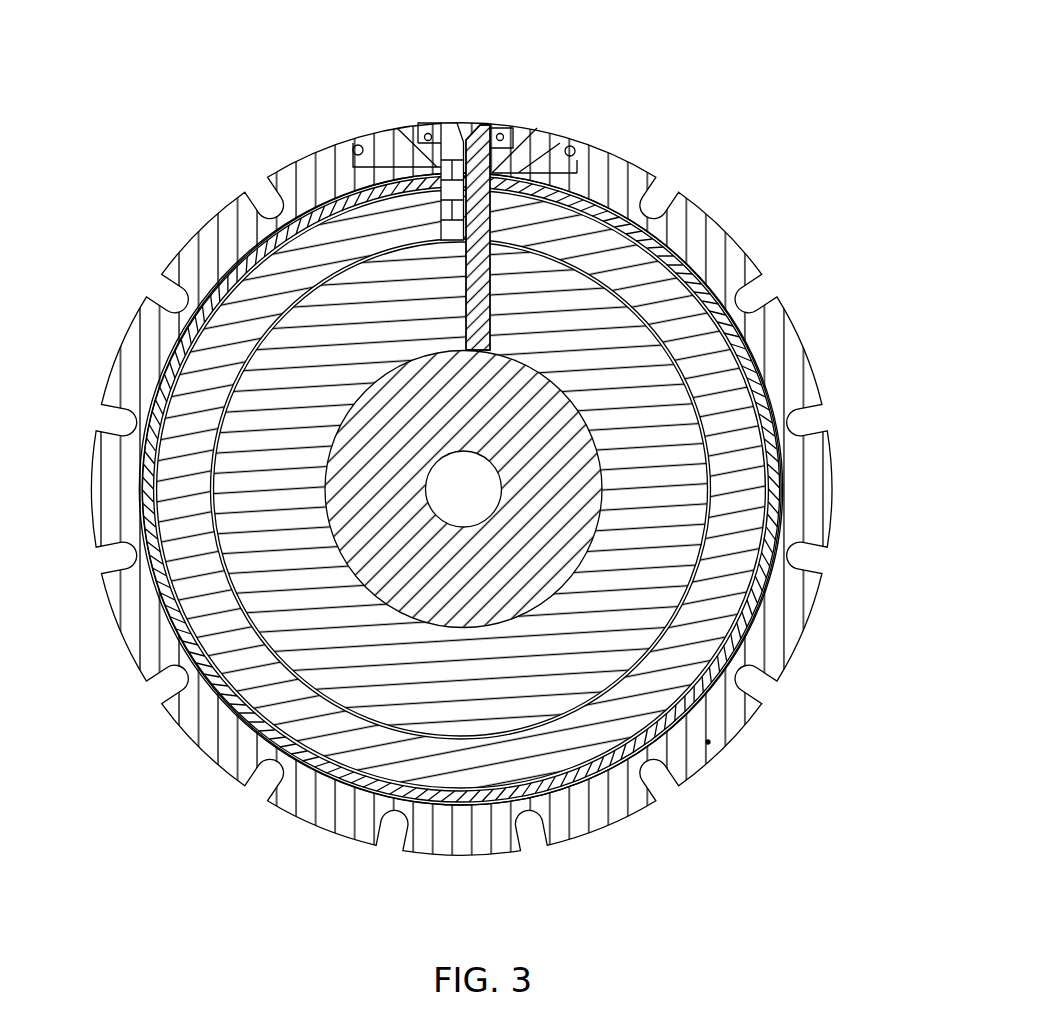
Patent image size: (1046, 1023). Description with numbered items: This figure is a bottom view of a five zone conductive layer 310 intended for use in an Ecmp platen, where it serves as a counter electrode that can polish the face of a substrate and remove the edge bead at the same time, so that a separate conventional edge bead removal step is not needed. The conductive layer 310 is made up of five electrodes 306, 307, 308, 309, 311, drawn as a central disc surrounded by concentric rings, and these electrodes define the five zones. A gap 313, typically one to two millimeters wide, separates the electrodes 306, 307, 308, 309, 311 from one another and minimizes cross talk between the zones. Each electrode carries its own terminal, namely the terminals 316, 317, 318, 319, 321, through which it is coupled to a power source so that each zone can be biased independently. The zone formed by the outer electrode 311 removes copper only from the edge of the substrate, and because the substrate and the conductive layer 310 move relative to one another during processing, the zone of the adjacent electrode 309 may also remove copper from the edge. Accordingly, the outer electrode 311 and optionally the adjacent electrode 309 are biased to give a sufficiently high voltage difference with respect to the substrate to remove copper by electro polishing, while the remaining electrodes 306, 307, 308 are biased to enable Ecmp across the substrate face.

The electrode 306 is at (387, 567).
The electrode 307 is at (290, 632).
The electrode 308 is at (210, 627).
The electrode 309 is at (163, 597).
The conductive layer 310 is at (452, 43).
The electrode 311 is at (630, 163).
The gap 313 is at (603, 407).
The terminal 316 is at (500, 133).
The terminal 317 is at (428, 133).
The terminal 318 is at (357, 145).
The terminal 319 is at (570, 146).
The terminal 321 is at (710, 745).